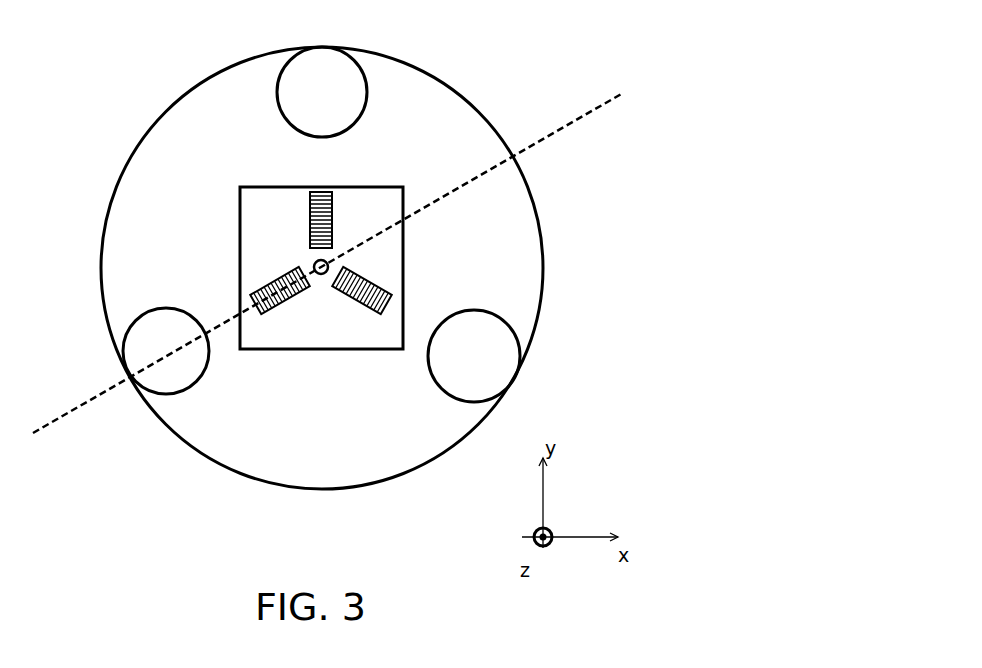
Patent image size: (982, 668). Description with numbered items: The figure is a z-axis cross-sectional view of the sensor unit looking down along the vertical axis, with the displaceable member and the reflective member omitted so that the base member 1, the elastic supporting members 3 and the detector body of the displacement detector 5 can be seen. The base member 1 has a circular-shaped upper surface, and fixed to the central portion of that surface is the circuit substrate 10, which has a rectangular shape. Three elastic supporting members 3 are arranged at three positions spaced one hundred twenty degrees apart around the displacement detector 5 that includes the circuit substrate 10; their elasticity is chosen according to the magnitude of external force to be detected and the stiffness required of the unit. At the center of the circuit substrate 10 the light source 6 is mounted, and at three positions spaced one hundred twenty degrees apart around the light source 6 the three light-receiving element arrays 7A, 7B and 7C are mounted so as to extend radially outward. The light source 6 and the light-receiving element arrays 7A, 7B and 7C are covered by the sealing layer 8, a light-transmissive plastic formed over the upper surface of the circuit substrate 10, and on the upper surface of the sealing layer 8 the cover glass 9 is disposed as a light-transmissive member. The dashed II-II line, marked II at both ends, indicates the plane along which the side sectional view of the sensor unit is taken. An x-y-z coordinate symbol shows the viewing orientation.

The base member 1 is at (143, 138).
The elastic supporting members 3 is at (360, 68).
The circuit substrate 10 is at (239, 281).
The light-receiving element array 7A is at (322, 192).
The light-receiving element array 7B is at (380, 273).
The light-receiving element array 7C is at (260, 270).
The light source 6 is at (320, 276).
The displacement detector 5 is at (258, 362).
The sealing layer 8 is at (360, 332).
The cover glass 9 is at (433, 503).
The II-II line II is at (52, 423).